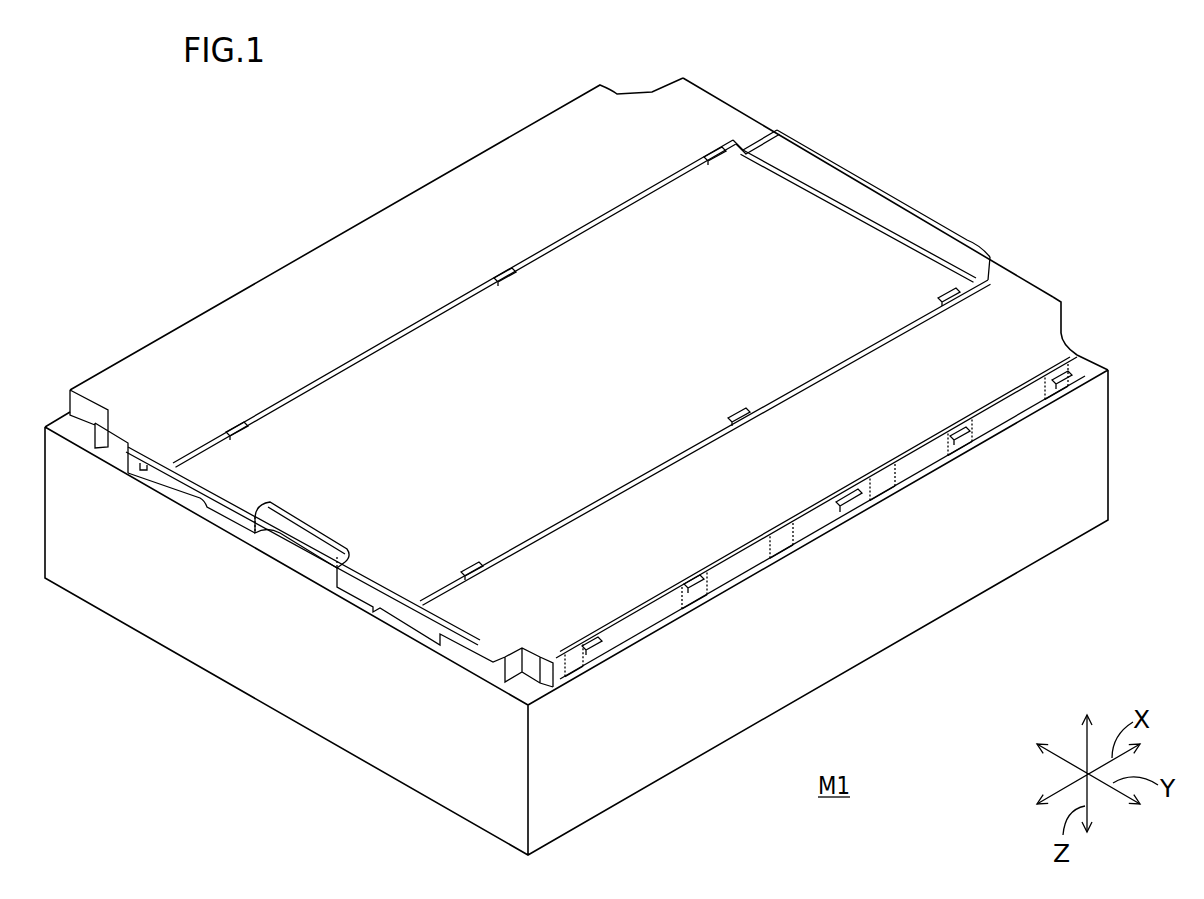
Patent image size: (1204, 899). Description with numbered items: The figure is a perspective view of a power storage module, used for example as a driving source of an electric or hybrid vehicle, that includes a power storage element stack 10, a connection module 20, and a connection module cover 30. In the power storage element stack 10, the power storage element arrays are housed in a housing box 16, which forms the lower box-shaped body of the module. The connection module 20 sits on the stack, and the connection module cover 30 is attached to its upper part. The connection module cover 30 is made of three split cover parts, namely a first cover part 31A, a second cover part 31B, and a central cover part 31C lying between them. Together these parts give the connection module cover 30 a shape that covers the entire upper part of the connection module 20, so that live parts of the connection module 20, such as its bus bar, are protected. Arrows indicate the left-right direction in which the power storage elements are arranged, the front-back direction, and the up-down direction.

The power storage element stack 10 is at (308, 740).
The housing box 16 is at (1082, 478).
The connection module 20 is at (227, 515).
The connection module cover 30 is at (808, 60).
The first cover part 31A is at (723, 117).
The second cover part 31B is at (1017, 303).
The central cover part 31C is at (832, 222).